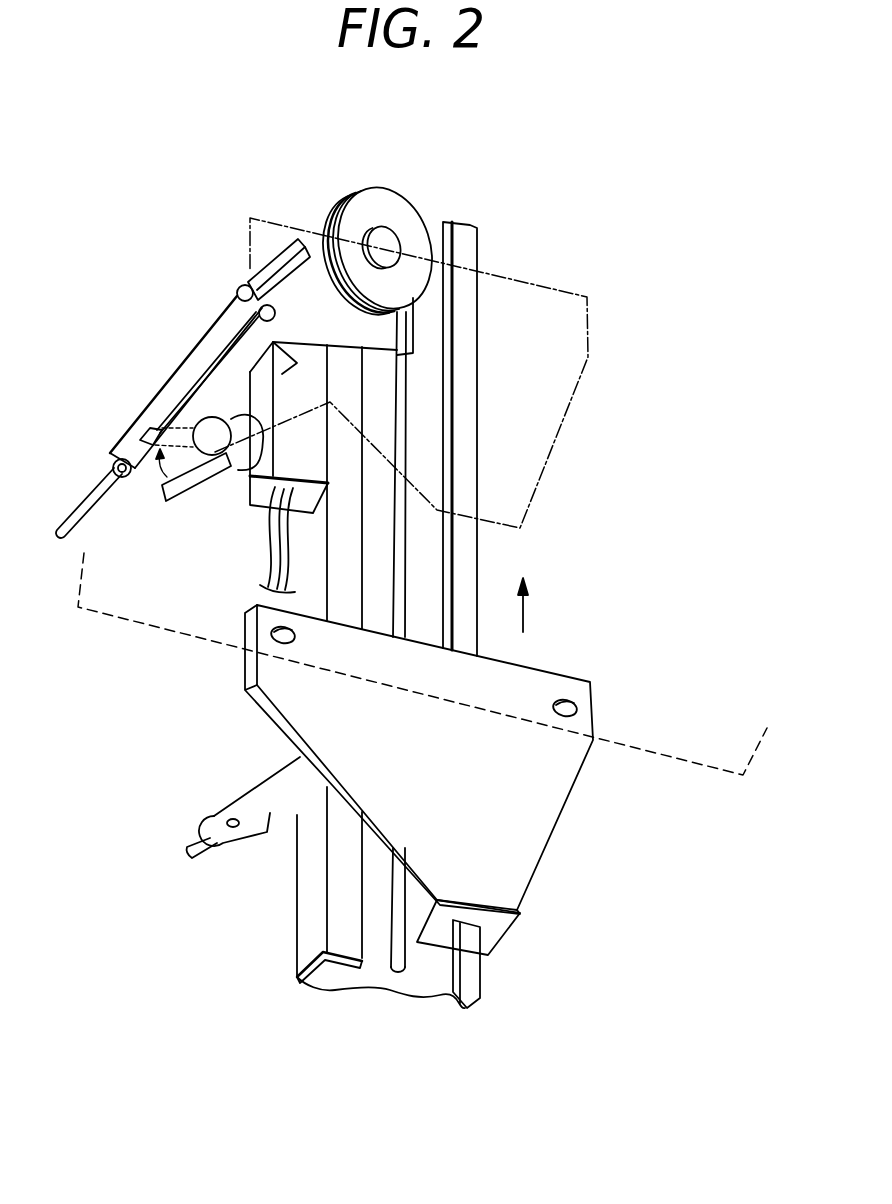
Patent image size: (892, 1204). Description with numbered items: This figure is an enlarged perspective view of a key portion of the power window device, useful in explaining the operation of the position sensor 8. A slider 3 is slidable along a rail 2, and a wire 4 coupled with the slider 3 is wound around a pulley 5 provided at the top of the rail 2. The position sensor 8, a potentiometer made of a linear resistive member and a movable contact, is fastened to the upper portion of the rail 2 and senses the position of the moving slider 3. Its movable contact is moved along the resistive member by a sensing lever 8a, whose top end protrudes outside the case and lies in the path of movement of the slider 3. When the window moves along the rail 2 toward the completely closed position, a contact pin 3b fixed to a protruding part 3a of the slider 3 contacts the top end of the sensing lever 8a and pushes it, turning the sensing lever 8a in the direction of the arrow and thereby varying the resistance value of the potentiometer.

The rail 2 is at (463, 560).
The slider 3 is at (537, 842).
The protruding part 3a is at (270, 813).
The contact pin 3b is at (192, 857).
The wire 4 is at (400, 455).
The pulley 5 is at (393, 216).
The position sensor 8 is at (240, 467).
The sensing lever 8a is at (178, 502).